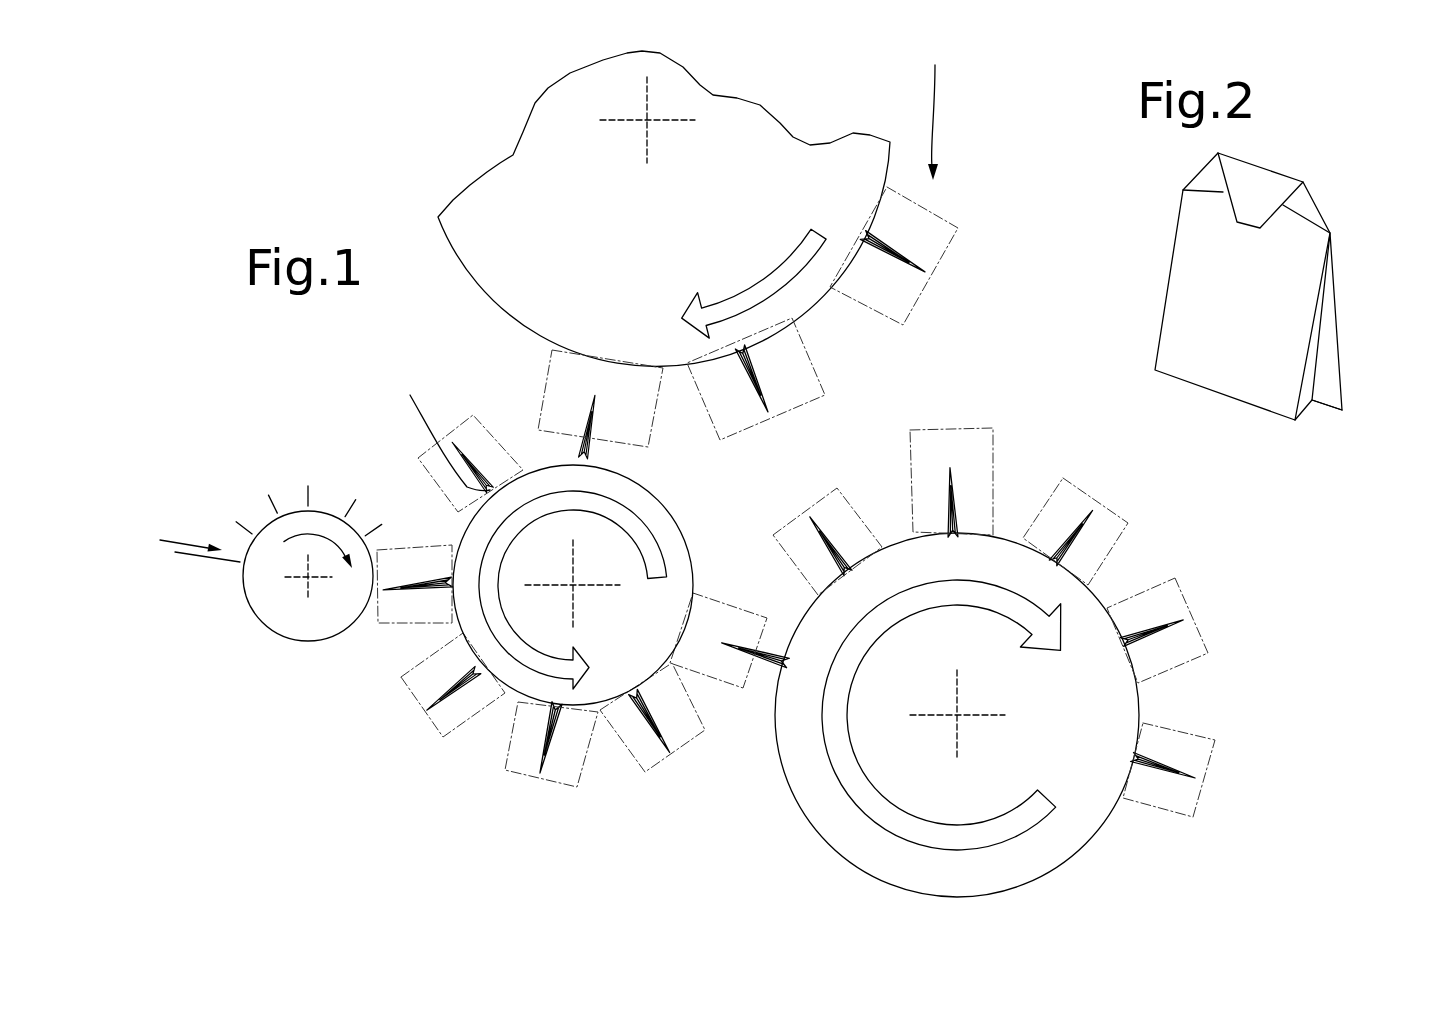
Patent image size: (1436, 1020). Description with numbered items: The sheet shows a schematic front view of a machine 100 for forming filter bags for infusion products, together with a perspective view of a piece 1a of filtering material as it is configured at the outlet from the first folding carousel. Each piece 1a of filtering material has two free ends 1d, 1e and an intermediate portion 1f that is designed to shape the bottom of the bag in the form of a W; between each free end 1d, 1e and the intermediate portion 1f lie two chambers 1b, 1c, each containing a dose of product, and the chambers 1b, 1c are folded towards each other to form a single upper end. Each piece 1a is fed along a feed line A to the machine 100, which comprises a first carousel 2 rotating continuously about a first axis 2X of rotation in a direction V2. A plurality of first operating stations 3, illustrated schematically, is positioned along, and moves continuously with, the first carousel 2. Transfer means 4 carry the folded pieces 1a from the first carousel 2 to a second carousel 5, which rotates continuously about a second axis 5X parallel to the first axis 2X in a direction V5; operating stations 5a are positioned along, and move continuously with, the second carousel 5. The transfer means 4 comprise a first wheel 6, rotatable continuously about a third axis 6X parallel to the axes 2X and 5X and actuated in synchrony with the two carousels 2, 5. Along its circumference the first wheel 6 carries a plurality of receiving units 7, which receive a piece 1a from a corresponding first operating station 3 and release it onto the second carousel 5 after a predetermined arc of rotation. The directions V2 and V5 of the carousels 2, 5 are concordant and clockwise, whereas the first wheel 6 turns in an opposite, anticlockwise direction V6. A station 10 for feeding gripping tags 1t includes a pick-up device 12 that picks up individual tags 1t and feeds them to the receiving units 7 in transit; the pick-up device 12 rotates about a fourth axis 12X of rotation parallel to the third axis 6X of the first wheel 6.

In FIG. 1, the machine 100 is at (985, 204).
In FIG. 1, the piece of filtering material 1a is at (903, 255).
In FIG. 2, the piece of filtering material 1a is at (1283, 248).
In FIG. 2, the chamber 1b is at (1327, 321).
In FIG. 2, the chamber 1c is at (1225, 317).
In FIG. 1, the free end 1d is at (437, 430).
In FIG. 2, the free end 1d is at (1264, 153).
In FIG. 1, the free end 1e is at (437, 430).
In FIG. 2, the free end 1e is at (1266, 172).
In FIG. 2, the intermediate portion 1f is at (1313, 400).
In FIG. 1, the gripping tag 1t is at (212, 565).
In FIG. 1, the first carousel 2 is at (522, 170).
In FIG. 1, the first axis of rotation 2X is at (647, 121).
In FIG. 1, the direction of rotation of the first carousel V2 is at (765, 280).
In FIG. 1, the feed line A is at (935, 116).
In FIG. 1, the first operating stations 3 is at (852, 372).
In FIG. 1, the transfer means 4 is at (403, 479).
In FIG. 1, the second carousel 5 is at (1085, 803).
In FIG. 1, the second axis of rotation 5X is at (958, 716).
In FIG. 1, the direction of rotation of the second carousel V5 is at (862, 778).
In FIG. 1, the operating station 5a is at (1218, 670).
In FIG. 1, the first wheel 6 is at (695, 572).
In FIG. 1, the third axis of rotation 6X is at (573, 587).
In FIG. 1, the direction of rotation of the first wheel V6 is at (530, 657).
In FIG. 1, the receiving units 7 is at (393, 649).
In FIG. 1, the station for feeding the tags 10 is at (205, 496).
In FIG. 1, the pick-up device 12 is at (277, 648).
In FIG. 1, the fourth axis of rotation 12X is at (309, 578).